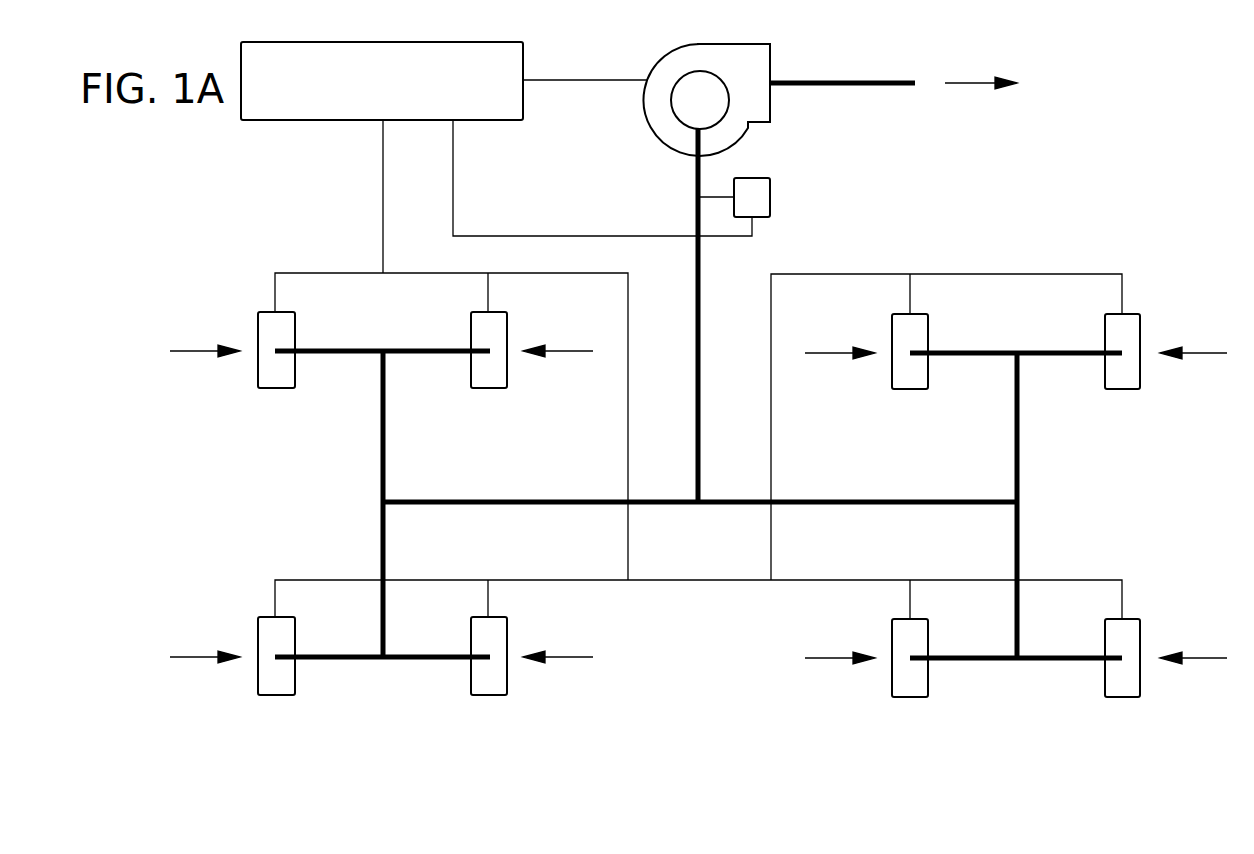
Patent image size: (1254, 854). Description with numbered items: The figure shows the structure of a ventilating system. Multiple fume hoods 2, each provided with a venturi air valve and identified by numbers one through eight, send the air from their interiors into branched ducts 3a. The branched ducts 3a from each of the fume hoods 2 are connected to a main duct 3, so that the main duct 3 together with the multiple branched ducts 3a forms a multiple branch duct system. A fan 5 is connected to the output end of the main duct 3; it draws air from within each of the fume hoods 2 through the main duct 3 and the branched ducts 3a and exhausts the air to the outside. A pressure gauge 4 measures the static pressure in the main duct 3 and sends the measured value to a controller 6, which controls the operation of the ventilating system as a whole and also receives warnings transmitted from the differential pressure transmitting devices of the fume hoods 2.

The fume hood 2 is at (276, 389).
The main duct 3 is at (697, 347).
The branched duct 3a is at (332, 348).
The pressure gauge 4 is at (771, 197).
The fan 5 is at (735, 43).
The controller 6 is at (345, 42).